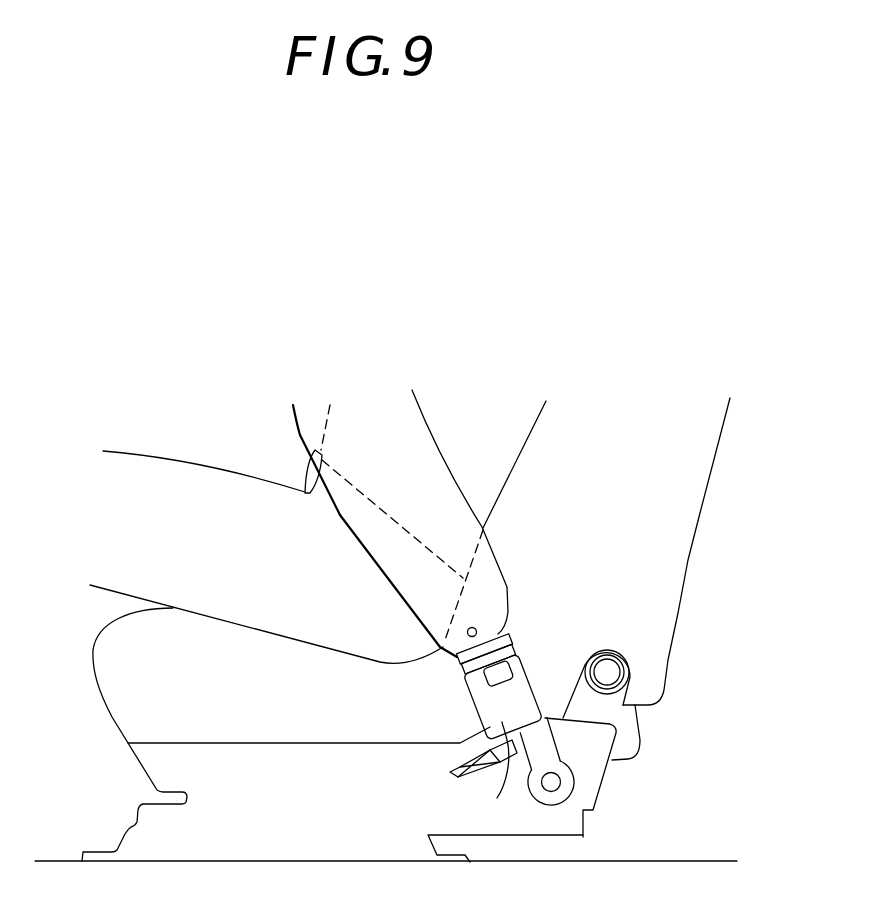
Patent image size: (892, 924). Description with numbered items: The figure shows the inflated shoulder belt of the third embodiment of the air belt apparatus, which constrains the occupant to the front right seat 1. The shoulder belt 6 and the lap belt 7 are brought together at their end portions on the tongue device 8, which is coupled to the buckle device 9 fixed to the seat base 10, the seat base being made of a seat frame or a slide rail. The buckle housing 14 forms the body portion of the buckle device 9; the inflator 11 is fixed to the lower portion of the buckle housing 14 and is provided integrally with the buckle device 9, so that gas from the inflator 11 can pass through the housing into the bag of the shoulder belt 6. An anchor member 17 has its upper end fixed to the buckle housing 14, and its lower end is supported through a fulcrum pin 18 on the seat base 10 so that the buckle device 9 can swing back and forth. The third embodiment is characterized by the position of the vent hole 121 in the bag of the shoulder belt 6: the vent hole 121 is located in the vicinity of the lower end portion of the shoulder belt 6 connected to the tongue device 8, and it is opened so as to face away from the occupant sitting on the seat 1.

The front right seat 1 is at (703, 517).
The shoulder belt 6 is at (380, 570).
The lap belt 7 is at (323, 501).
The tongue device 8 is at (517, 640).
The buckle device 9 is at (466, 706).
The seat base 10 is at (594, 780).
The inflator 11 is at (455, 775).
The vent hole 121 is at (478, 628).
The buckle housing 14 is at (496, 778).
The anchor member 17 is at (543, 750).
The fulcrum pin 18 is at (551, 792).